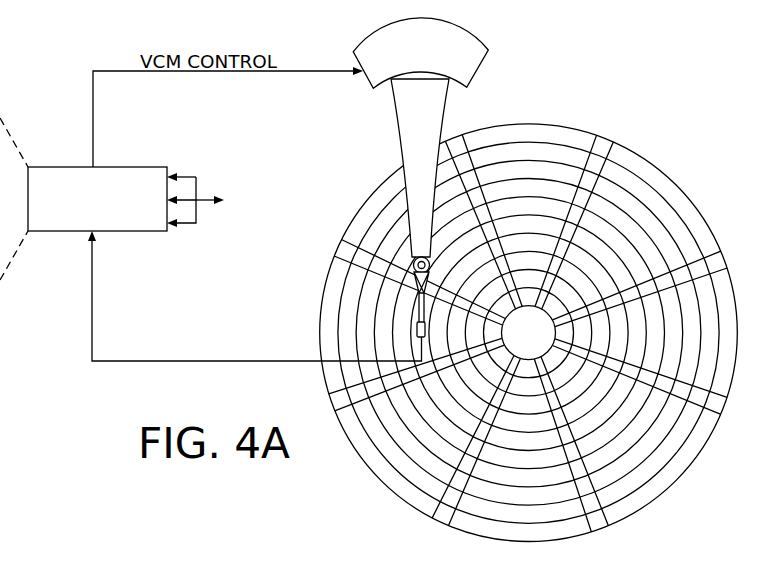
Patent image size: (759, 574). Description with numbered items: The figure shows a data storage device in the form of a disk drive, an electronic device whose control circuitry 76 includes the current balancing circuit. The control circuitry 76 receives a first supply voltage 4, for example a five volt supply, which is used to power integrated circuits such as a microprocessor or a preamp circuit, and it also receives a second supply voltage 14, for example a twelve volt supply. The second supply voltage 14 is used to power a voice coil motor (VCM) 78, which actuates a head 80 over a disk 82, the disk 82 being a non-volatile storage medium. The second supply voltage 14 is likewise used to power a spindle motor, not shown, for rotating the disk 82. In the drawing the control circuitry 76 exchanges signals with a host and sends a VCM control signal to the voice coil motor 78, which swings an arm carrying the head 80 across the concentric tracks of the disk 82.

The first supply voltage 4 is at (183, 173).
The second supply voltage 14 is at (185, 226).
The control circuitry 76 is at (133, 166).
The voice coil motor (VCM) 78 is at (368, 80).
The head 80 is at (405, 323).
The disk 82 is at (668, 168).